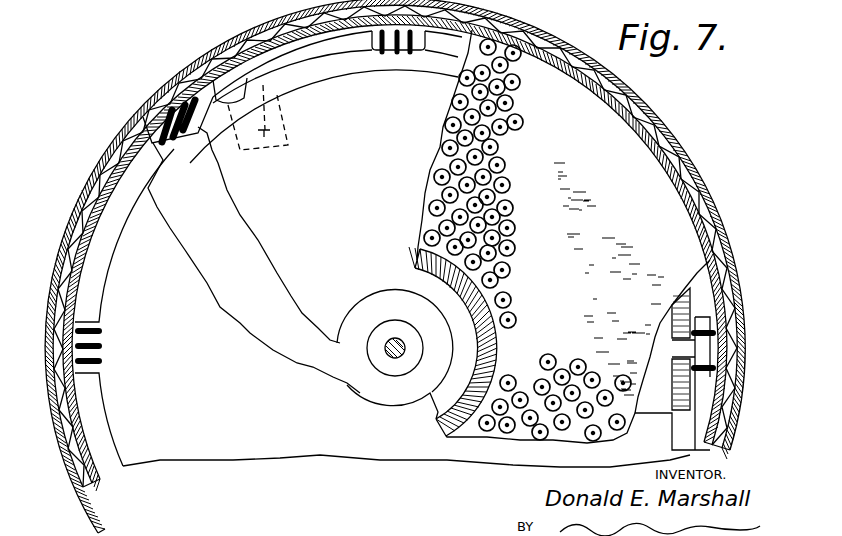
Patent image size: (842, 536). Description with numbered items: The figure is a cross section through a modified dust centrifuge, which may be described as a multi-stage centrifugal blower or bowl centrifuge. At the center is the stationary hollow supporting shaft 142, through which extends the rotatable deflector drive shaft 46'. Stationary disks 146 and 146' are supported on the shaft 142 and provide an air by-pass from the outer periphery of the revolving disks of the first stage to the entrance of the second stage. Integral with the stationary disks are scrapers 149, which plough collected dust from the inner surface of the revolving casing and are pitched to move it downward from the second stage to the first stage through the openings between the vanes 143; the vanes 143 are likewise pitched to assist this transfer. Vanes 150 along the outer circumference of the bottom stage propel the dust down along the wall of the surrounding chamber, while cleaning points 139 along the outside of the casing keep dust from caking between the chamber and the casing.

The scrapers 149 is at (207, 58).
The vanes 150 is at (267, 68).
The cleaning points or projections 139 is at (497, 150).
The vanes 143 is at (172, 150).
The stationary disk 146 is at (254, 268).
The stationary disk 146' is at (269, 235).
The stationary supporting shaft 142 is at (383, 349).
The shaft 46' is at (392, 389).